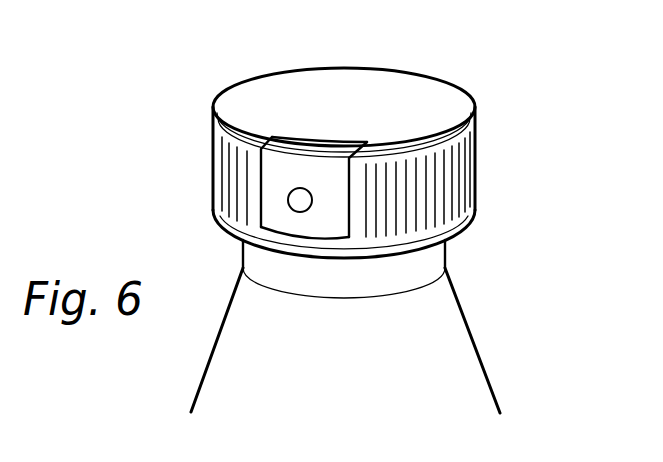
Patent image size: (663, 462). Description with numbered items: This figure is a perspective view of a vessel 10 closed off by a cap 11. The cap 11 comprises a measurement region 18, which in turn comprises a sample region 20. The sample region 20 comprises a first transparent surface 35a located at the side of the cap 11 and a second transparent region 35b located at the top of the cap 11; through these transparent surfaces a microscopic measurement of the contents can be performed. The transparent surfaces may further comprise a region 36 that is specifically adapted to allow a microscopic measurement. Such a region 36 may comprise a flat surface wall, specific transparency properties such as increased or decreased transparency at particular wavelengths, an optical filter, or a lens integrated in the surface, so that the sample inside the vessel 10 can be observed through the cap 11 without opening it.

The vessel 10 is at (491, 337).
The cap 11 is at (488, 102).
The measurement region 18 is at (277, 197).
The sample region 20 is at (288, 167).
The first transparent surface 35a is at (280, 218).
The second transparent region 35b is at (314, 148).
The region specifically adapted to allow a microscopic measurement 36 is at (300, 202).